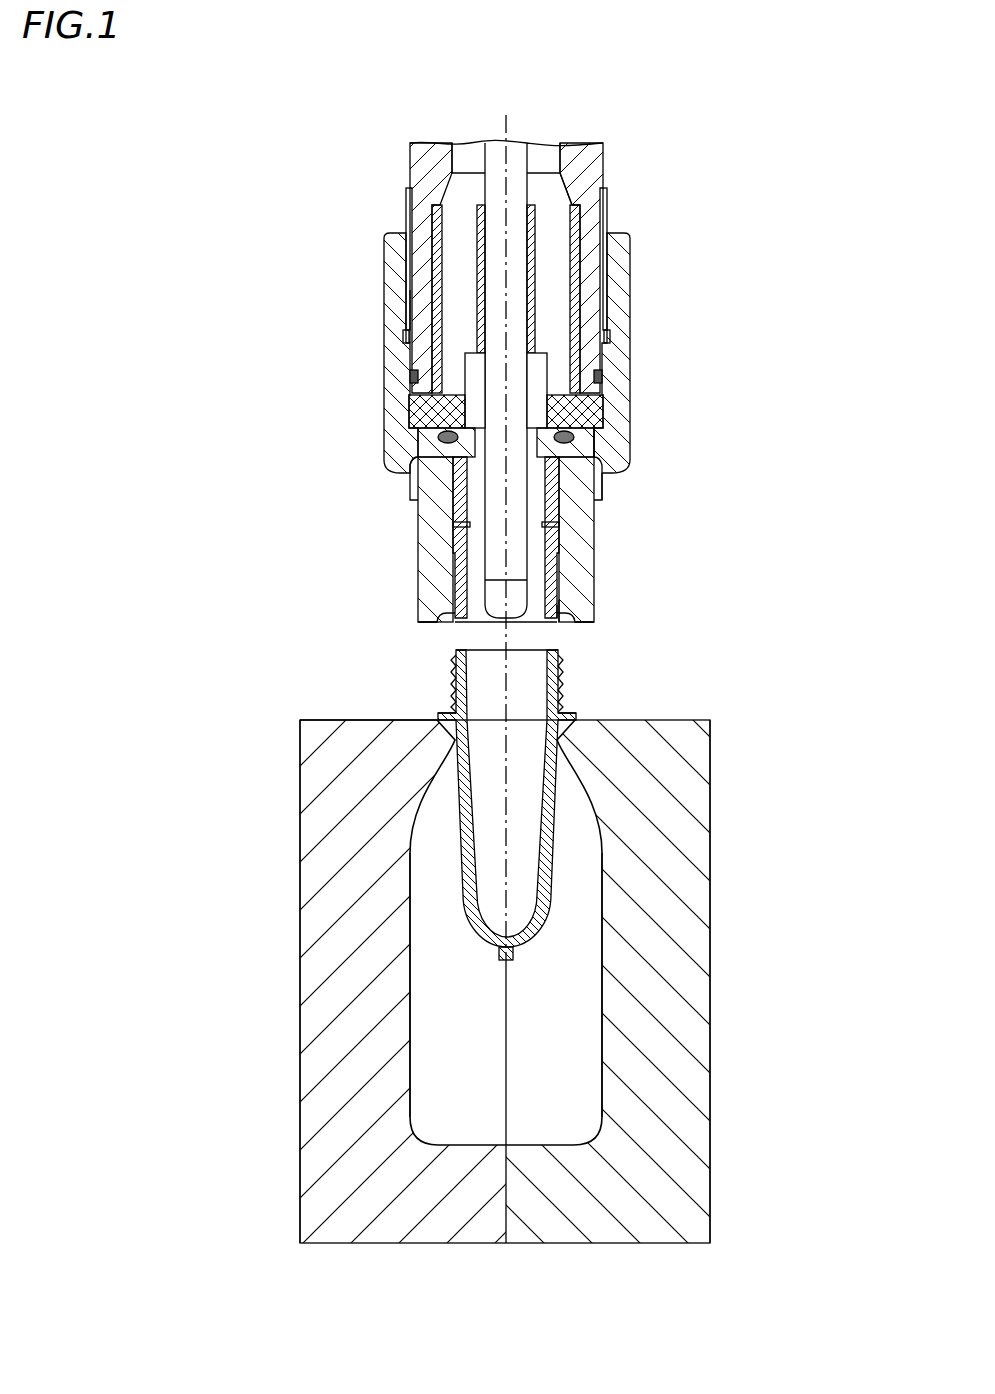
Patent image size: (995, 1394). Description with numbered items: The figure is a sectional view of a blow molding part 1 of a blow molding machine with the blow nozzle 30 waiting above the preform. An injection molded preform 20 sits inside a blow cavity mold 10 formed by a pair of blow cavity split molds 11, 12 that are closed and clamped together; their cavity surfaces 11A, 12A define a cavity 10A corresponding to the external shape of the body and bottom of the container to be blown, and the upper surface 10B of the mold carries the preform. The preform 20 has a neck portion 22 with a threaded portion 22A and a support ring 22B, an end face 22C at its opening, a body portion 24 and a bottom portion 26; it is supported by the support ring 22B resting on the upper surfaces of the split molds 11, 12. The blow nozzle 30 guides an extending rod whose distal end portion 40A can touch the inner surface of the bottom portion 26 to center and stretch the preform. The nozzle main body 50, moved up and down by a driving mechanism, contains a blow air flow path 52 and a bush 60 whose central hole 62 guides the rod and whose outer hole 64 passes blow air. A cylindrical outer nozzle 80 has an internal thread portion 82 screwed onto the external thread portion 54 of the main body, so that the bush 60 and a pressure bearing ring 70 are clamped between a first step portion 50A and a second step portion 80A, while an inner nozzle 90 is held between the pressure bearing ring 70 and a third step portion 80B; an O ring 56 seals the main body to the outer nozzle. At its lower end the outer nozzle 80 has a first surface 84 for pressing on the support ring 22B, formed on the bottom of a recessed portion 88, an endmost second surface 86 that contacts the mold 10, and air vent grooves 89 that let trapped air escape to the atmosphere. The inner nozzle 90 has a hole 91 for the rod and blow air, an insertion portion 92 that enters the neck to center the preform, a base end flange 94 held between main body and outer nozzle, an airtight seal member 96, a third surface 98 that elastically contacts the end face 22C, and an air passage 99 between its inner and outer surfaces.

The blow molding part 1 is at (705, 168).
The blow cavity mold 10 is at (430, 1244).
The cavity 10A is at (575, 1022).
The upper surface of mold 10B is at (346, 720).
The blow cavity split mold 11 is at (300, 937).
The cavity surface 11A is at (410, 977).
The blow cavity split mold 12 is at (710, 1072).
The cavity surface 12A is at (602, 1063).
The preform 20 is at (552, 882).
The neck portion 22 is at (627, 650).
The threaded portion 22A is at (557, 682).
The support ring 22B is at (570, 712).
The end face 22C is at (553, 652).
The body portion 24 is at (548, 832).
The bottom portion 26 is at (507, 950).
The blow nozzle 30 is at (664, 314).
The distal end portion 40A is at (498, 600).
The nozzle main body 50 is at (410, 153).
The first step portion 50A is at (585, 200).
The flow path 52 is at (472, 143).
The external thread portion 54 is at (415, 245).
The O ring 56 is at (412, 378).
The bush 60 is at (437, 305).
The hole 62 is at (513, 220).
The hole 64 is at (555, 272).
The pressure bearing ring 70 is at (420, 410).
The outer nozzle 80 is at (430, 547).
The second step portion 80A is at (603, 440).
The third step portion 80B is at (600, 483).
The internal thread portion 82 is at (412, 290).
The first surface 84 is at (572, 614).
The second surface 86 is at (437, 624).
The recessed portion 88 is at (580, 625).
The air vent groove 89 is at (574, 624).
The inner nozzle 90 is at (440, 492).
The hole 91 is at (535, 512).
The insertion portion 92 is at (545, 565).
The base end flange 94 is at (415, 462).
The airtight seal member 96 is at (440, 437).
The third surface 98 is at (462, 570).
The air passage 99 is at (456, 527).